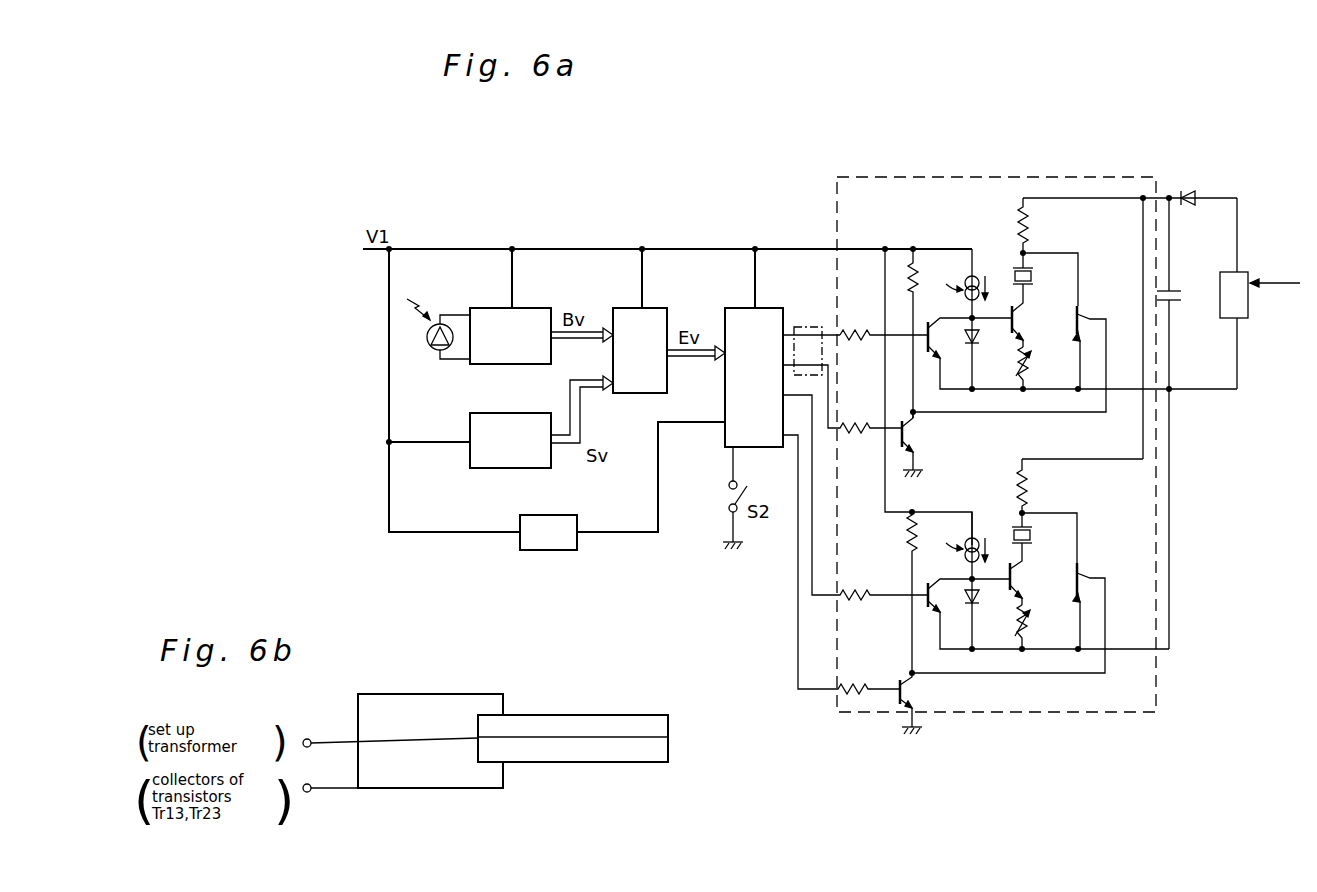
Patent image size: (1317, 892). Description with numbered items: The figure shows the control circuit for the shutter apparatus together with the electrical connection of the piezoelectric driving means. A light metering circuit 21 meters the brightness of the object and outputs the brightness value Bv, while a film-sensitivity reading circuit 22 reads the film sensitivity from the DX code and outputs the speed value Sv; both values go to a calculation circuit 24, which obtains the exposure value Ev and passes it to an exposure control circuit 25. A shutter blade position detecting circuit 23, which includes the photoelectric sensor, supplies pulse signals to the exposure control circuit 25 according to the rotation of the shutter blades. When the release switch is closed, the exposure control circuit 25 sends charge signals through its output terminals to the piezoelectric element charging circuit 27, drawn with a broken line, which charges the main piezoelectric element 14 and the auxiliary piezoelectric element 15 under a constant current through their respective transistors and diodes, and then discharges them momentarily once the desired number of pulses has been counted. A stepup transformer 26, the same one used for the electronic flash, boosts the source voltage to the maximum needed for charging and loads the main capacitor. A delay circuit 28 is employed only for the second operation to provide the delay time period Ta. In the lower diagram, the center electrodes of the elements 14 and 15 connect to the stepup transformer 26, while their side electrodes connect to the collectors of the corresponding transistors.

In FIG. 6A, the light metering circuit 21 is at (480, 318).
In FIG. 6A, the film-sensitivity reading circuit 22 is at (470, 424).
In FIG. 6A, the shutter blade position detecting circuit 23 is at (521, 546).
In FIG. 6A, the calculation circuit 24 is at (617, 310).
In FIG. 6A, the exposure control circuit 25 is at (737, 308).
In FIG. 6A, the stepup transformer 26 is at (1250, 312).
In FIG. 6A, the piezoelectric element charging circuit 27 is at (1156, 675).
In FIG. 6A, the delay circuit 28 is at (815, 325).
In FIG. 6A, the main piezoelectric element 14 is at (1013, 272).
In FIG. 6B, the main piezoelectric element 14 is at (501, 727).
In FIG. 6A, the auxiliary piezoelectric element 15 is at (1032, 533).
In FIG. 6B, the auxiliary piezoelectric element 15 is at (637, 713).